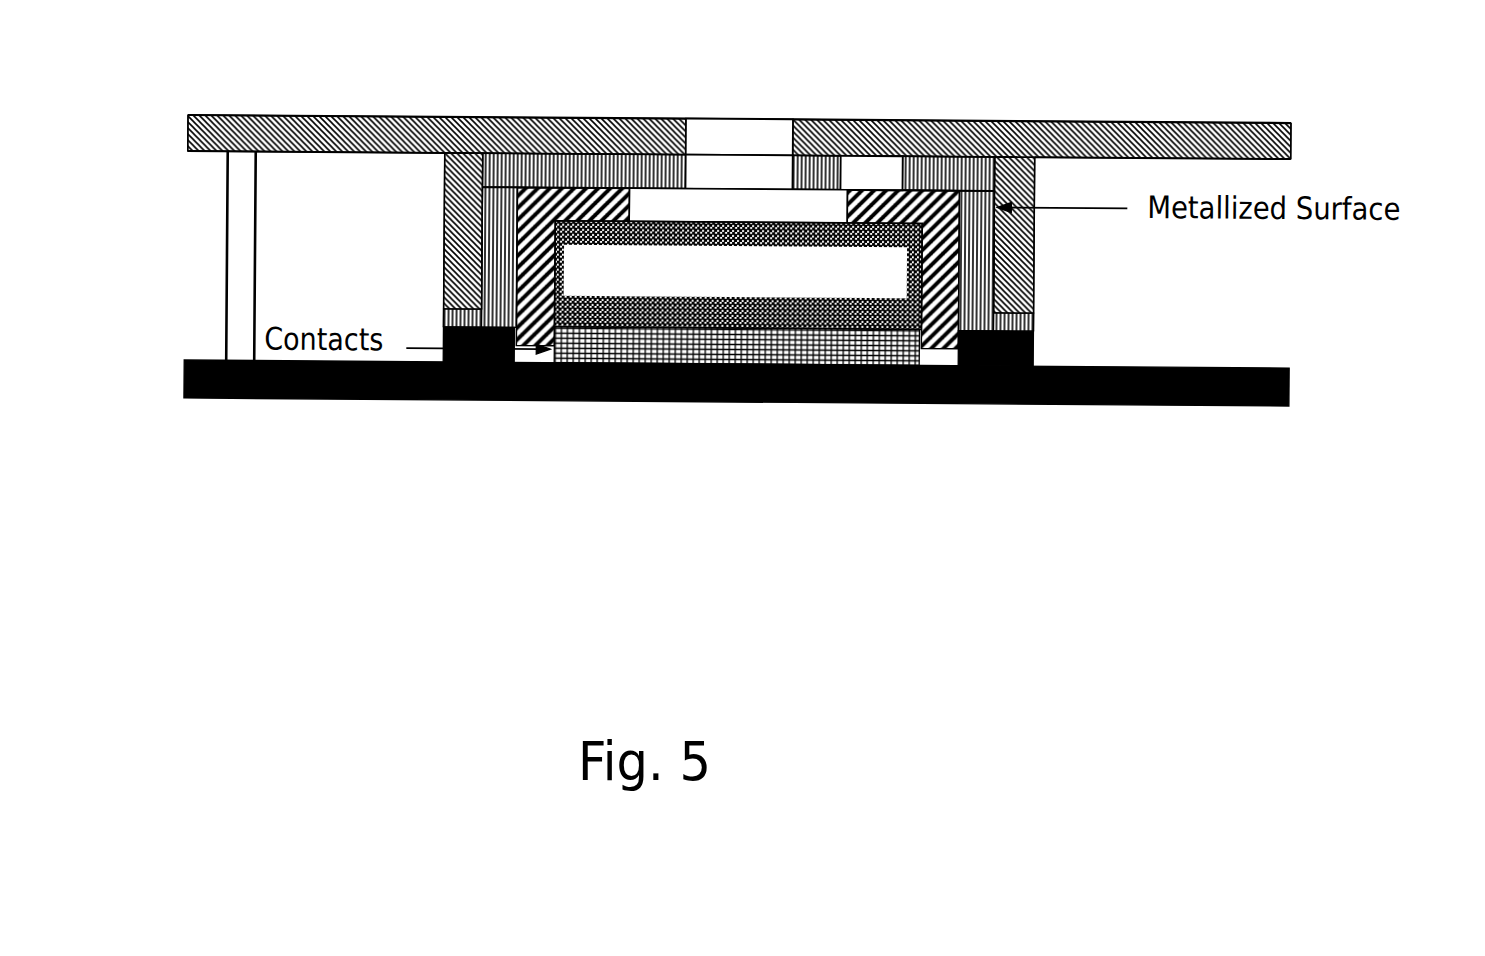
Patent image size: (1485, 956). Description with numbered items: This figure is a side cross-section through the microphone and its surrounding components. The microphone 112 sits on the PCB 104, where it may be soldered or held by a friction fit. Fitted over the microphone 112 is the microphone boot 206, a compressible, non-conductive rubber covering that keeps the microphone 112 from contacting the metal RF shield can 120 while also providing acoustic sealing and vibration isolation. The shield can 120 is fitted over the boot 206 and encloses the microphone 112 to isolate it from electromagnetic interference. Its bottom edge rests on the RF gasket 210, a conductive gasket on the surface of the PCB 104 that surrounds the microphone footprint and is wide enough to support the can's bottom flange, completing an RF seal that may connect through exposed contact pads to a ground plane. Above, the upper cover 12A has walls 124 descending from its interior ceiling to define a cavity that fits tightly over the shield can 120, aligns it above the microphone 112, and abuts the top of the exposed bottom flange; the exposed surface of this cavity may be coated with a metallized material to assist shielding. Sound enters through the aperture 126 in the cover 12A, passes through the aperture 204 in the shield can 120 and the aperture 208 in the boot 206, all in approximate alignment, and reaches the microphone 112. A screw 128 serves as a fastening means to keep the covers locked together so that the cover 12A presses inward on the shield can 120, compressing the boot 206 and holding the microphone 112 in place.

The upper cover 12A is at (823, 223).
The PCB 104 is at (808, 380).
The microphone 112 is at (738, 293).
The RF shield can 120 is at (871, 173).
The walls 124 is at (446, 196).
The aperture 126 is at (739, 139).
The screw 128 is at (201, 256).
The aperture 204 is at (738, 172).
The microphone boot 206 is at (962, 266).
The aperture 208 is at (738, 207).
The RF gasket 210 is at (1038, 335).